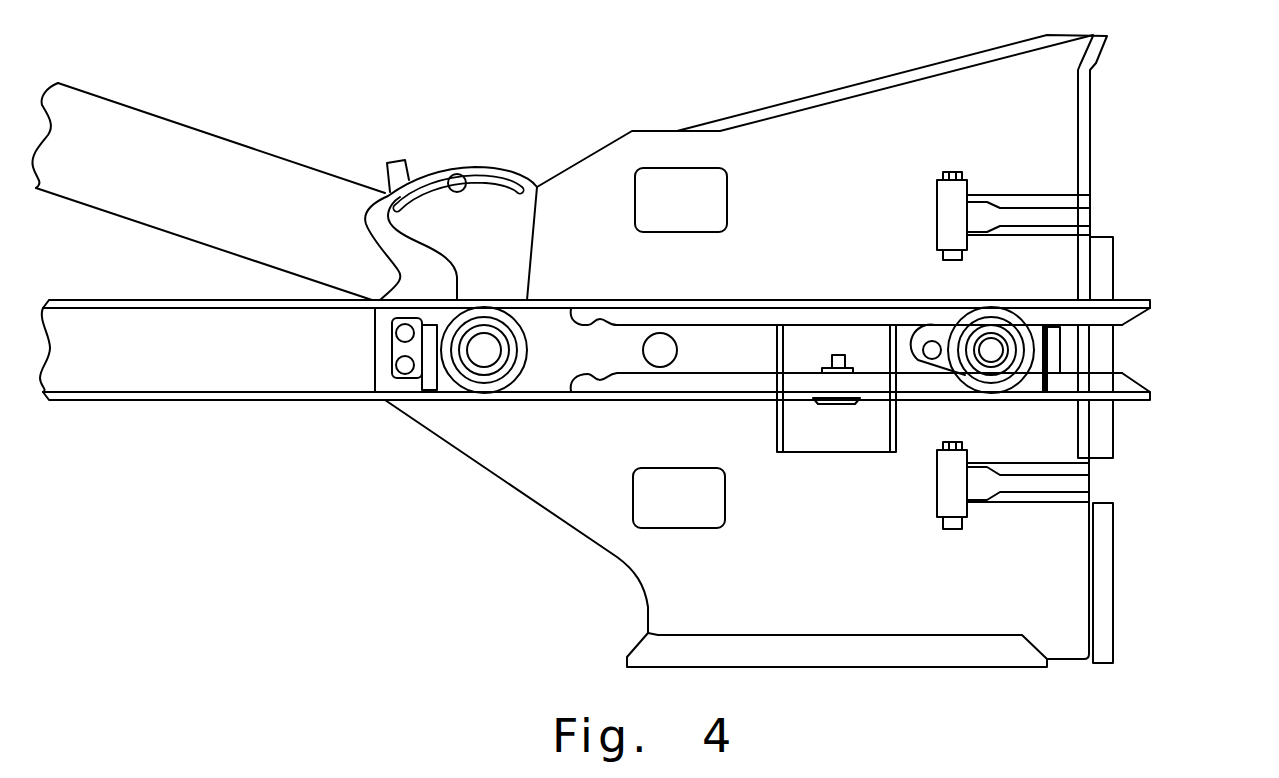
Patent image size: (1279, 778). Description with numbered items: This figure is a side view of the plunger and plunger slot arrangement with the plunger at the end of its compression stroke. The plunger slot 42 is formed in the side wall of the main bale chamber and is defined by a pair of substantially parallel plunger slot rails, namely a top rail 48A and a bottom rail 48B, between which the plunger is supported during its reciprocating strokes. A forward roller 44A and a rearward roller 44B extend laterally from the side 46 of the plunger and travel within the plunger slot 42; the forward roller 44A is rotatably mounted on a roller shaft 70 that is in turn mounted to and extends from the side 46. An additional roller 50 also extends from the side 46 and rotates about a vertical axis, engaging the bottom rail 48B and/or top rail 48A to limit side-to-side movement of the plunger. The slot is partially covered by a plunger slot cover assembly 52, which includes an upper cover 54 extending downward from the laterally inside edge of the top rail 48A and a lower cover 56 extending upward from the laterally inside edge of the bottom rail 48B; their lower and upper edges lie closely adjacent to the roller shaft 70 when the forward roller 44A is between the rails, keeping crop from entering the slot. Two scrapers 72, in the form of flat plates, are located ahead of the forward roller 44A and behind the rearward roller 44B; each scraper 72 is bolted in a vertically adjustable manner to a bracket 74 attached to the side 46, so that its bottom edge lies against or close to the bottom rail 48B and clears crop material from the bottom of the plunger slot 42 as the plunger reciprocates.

The plunger slot 42 is at (197, 352).
The forward roller 44A is at (990, 388).
The rearward roller 44B is at (472, 388).
The side of the plunger 46 is at (857, 124).
The top rail 48A is at (128, 300).
The bottom rail 48B is at (138, 397).
The additional roller 50 is at (835, 403).
The plunger slot cover assembly 52 is at (1150, 318).
The upper cover 54 is at (590, 323).
The lower cover 56 is at (575, 385).
The roller shaft 70 is at (990, 348).
The scraper 72 is at (393, 390).
The bracket 74 is at (1037, 335).